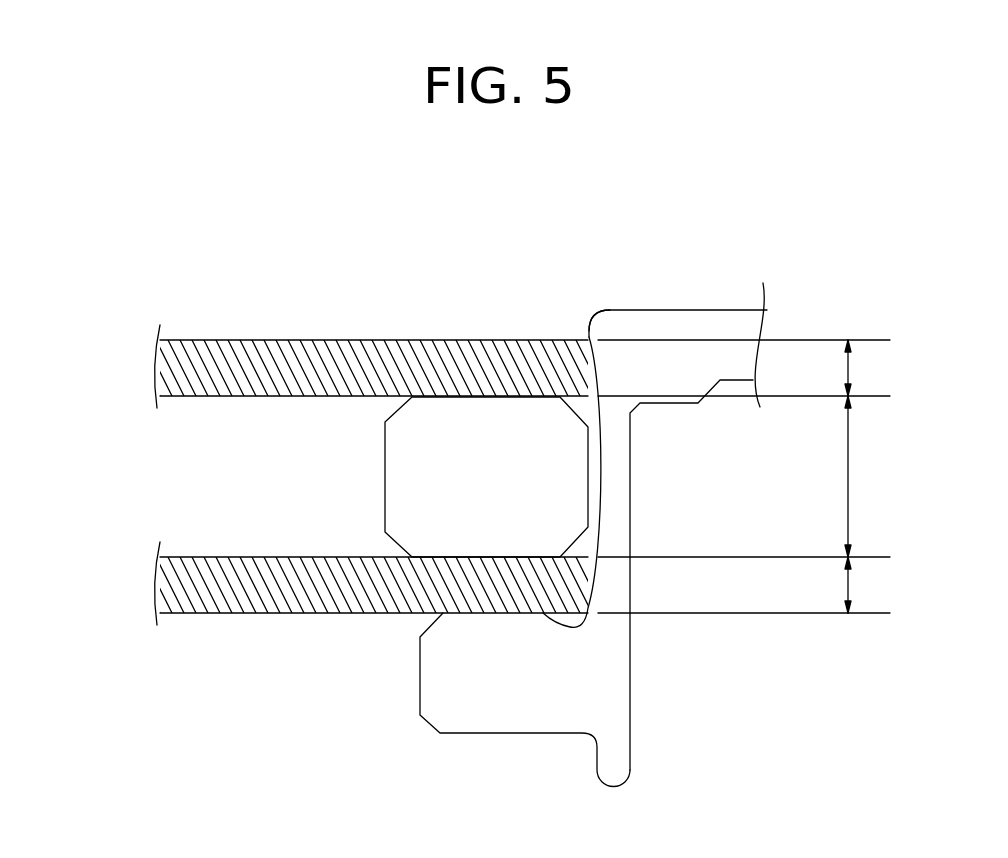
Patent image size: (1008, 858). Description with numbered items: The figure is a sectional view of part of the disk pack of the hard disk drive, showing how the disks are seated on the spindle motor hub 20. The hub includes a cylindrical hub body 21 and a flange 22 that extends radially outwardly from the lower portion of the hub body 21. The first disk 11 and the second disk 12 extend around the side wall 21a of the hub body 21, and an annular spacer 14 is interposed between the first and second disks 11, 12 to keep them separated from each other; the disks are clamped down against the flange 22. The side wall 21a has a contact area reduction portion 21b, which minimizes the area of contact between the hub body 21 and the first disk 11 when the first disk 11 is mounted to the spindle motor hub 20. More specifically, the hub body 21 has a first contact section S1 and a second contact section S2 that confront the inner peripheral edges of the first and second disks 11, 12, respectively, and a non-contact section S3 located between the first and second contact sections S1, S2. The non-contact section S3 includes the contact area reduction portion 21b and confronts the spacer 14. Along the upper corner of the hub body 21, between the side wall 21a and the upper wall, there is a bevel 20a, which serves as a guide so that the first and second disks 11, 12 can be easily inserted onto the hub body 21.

The first disk 11 is at (193, 585).
The second disk 12 is at (193, 367).
The spacer 14 is at (393, 473).
The spindle motor hub 20 is at (655, 494).
The bevel 20a is at (596, 323).
The hub body 21 is at (735, 330).
The side wall 21a is at (618, 482).
The contact area reduction portion 21b is at (600, 480).
The flange 22 is at (487, 693).
The first contact section S1 is at (866, 585).
The second contact section S2 is at (866, 368).
The non-contact section S3 is at (866, 476).